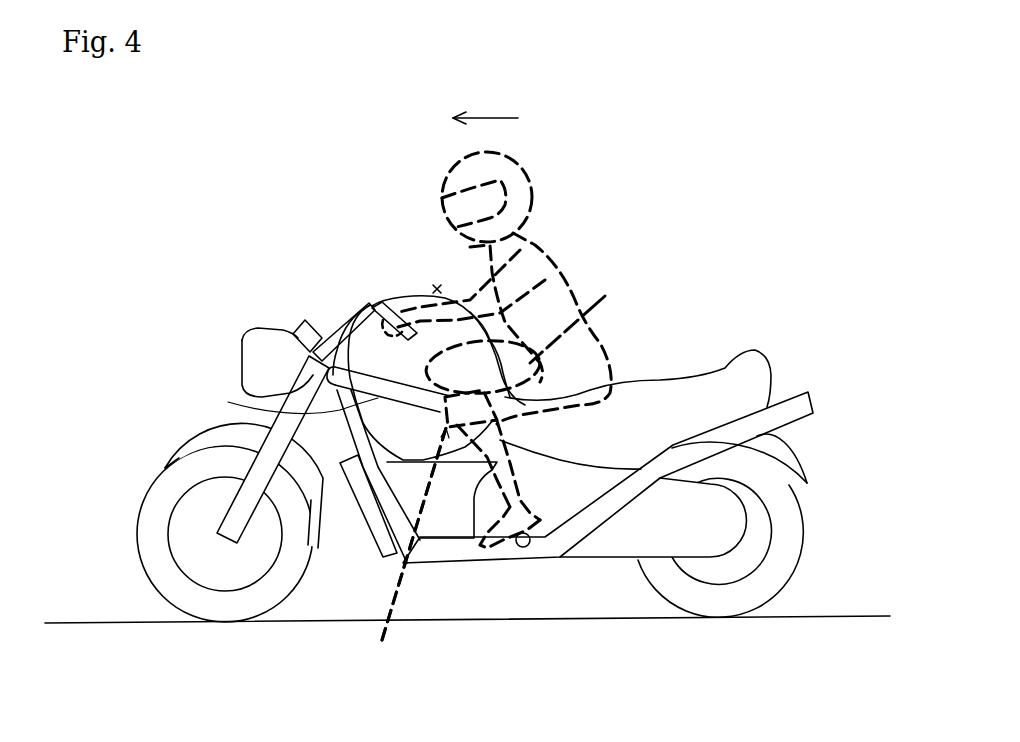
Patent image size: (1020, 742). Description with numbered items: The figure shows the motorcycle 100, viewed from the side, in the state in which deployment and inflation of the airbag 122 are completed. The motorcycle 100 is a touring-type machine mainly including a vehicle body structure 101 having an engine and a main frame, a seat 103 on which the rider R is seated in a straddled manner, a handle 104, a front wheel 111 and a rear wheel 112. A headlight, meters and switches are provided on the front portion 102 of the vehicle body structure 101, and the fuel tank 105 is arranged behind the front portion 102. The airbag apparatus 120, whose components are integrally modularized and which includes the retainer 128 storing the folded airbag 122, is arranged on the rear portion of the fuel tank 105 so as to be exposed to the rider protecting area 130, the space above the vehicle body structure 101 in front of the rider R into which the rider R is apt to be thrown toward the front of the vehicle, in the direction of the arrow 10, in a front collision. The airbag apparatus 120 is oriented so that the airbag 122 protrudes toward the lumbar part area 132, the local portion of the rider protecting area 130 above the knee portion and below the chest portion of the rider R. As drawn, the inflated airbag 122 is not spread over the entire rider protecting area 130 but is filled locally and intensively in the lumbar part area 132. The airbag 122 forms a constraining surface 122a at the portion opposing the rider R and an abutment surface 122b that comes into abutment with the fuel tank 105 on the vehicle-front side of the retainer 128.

The arrow 10 is at (485, 106).
The motorcycle 100 is at (722, 283).
The vehicle body structure 101 is at (453, 565).
The front portion 102 is at (296, 330).
The seat 103 is at (680, 392).
The handle 104 is at (374, 304).
The fuel tank 105 is at (342, 368).
The front wheel 111 is at (222, 610).
The rear wheel 112 is at (713, 602).
The airbag apparatus 120 is at (389, 550).
The retainer 128 is at (408, 550).
The airbag 122 is at (409, 297).
The constraining surface 122a is at (475, 335).
The abutment surface 122b is at (277, 401).
The rider protecting area 130 is at (436, 288).
The lumbar part area 132 is at (581, 321).
The rider R is at (567, 297).